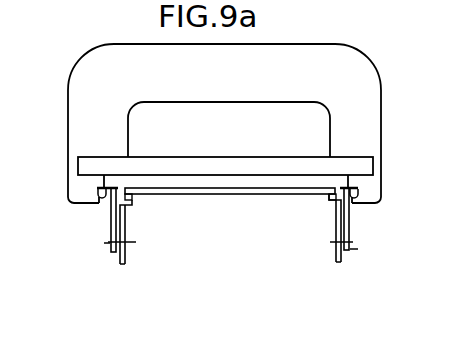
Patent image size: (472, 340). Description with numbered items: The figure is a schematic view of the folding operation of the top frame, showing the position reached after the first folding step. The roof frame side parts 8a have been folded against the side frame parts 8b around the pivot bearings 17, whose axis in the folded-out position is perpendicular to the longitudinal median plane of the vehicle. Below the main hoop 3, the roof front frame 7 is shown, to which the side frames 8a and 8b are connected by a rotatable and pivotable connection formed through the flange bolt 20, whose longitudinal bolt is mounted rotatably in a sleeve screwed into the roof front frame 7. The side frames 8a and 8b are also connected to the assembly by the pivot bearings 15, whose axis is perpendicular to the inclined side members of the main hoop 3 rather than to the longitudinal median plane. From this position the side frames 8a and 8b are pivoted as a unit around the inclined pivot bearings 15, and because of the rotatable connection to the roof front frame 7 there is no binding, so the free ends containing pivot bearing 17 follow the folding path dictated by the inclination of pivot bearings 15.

The main hoop 3 is at (214, 170).
The roof front frame 7 is at (244, 194).
The roof frame side part 8a is at (125, 253).
The side frame part 8b is at (111, 238).
The pivot bearing 15 is at (96, 197).
The pivot bearing 17 is at (107, 243).
The flange bolt 20 is at (230, 238).